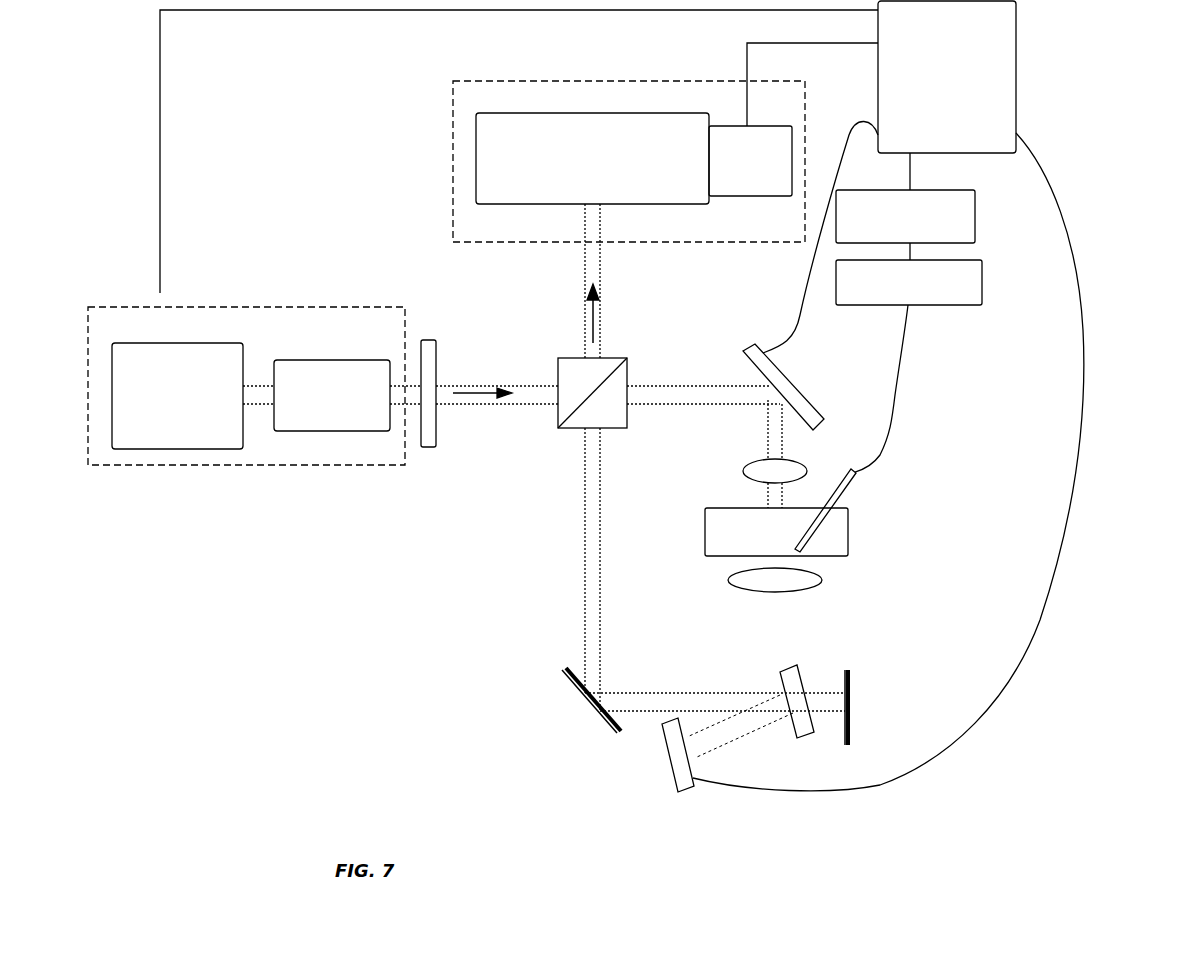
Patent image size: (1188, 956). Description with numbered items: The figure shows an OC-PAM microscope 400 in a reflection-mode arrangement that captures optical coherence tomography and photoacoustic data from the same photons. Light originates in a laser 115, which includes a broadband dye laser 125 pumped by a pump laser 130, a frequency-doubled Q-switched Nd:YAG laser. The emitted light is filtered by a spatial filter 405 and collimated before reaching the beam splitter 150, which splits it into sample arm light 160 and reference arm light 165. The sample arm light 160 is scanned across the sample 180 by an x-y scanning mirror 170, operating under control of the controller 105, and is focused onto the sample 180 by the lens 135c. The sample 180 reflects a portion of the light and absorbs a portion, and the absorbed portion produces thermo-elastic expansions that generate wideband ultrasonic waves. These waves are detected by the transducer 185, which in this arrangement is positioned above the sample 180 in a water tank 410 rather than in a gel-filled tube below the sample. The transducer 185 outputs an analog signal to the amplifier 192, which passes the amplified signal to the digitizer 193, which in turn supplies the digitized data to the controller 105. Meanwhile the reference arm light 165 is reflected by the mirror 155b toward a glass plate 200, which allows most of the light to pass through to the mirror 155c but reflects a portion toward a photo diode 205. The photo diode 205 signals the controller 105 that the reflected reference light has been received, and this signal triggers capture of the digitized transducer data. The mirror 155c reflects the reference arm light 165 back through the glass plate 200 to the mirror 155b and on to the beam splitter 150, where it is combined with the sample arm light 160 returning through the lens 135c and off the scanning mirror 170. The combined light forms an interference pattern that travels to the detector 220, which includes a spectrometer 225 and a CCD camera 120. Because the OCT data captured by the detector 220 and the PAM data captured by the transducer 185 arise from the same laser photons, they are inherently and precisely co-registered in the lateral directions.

The OC-PAM microscope 400 is at (1128, 101).
The controller 105 is at (888, 396).
The digitizer 193 is at (905, 225).
The amplifier 192 is at (909, 366).
The detector 220 is at (452, 134).
The spectrometer 225 is at (592, 158).
The CCD camera 120 is at (750, 161).
The laser 115 is at (210, 478).
The pump laser 130 is at (193, 396).
The dye laser 125 is at (347, 395).
The spatial filter 405 is at (440, 433).
The beam splitter 150 is at (570, 357).
The sample arm light 160 is at (666, 378).
The x-y scanning mirror 170 is at (808, 408).
The lens 135c is at (747, 462).
The ultrasonic transducer 185 is at (850, 487).
The water tank 410 is at (848, 537).
The sample 180 is at (743, 584).
The reference arm light 165 is at (563, 522).
The mirror 155b is at (598, 725).
The glass plate 200 is at (811, 655).
The mirror 155c is at (855, 733).
The photo diode 205 is at (688, 790).